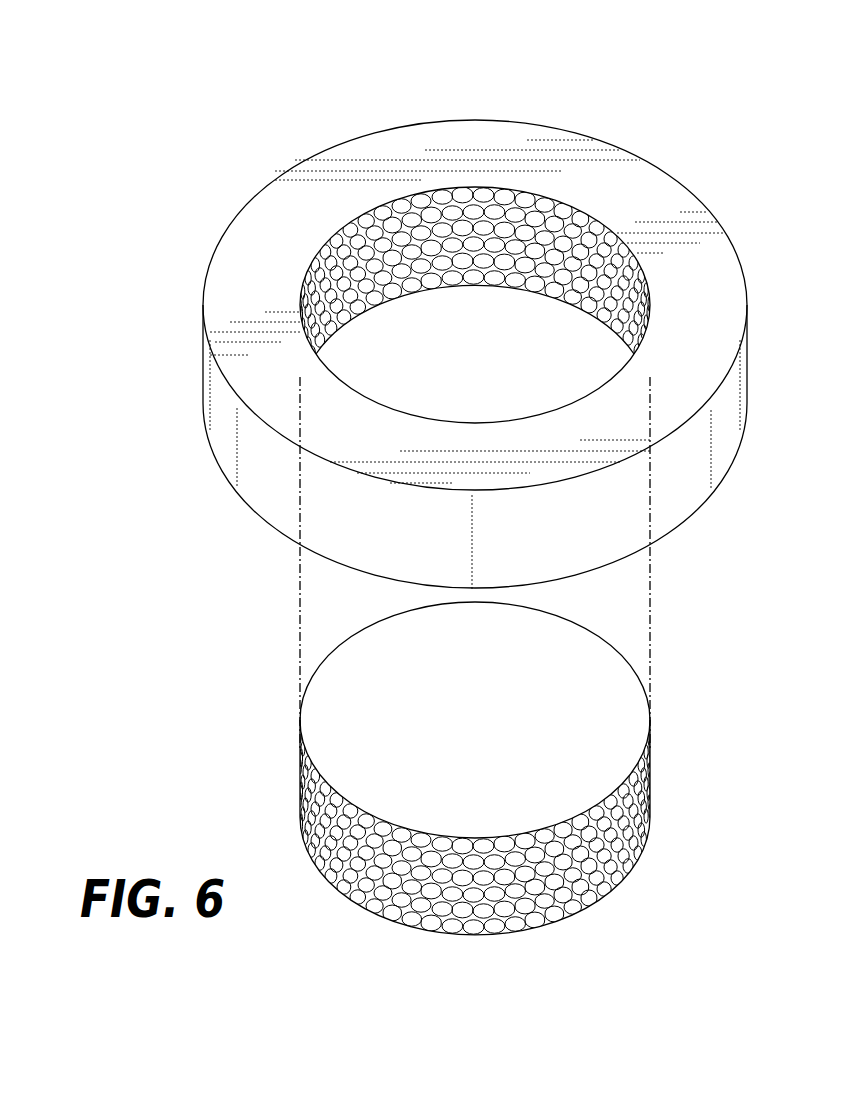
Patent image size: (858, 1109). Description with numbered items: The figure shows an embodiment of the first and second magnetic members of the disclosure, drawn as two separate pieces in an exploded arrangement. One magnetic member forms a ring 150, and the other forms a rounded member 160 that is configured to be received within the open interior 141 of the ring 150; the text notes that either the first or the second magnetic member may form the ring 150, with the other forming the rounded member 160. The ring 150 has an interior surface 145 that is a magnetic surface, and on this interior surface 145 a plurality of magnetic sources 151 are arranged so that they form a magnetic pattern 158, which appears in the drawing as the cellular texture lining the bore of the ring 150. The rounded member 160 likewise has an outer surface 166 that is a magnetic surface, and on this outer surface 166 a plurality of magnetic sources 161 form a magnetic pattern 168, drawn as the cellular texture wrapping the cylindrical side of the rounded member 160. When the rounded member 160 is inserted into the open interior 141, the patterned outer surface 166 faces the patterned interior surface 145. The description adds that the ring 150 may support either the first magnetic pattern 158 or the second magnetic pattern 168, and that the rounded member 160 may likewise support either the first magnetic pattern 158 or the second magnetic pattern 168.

The ring 150 is at (702, 124).
The magnetic sources 151 is at (480, 190).
The magnetic pattern 158 is at (438, 210).
The interior surface 145 is at (536, 197).
The open interior 141 is at (489, 376).
The rounded member 160 is at (653, 761).
The magnetic pattern 168 is at (300, 760).
The magnetic sources 161 is at (652, 835).
The outer surface 166 is at (338, 880).